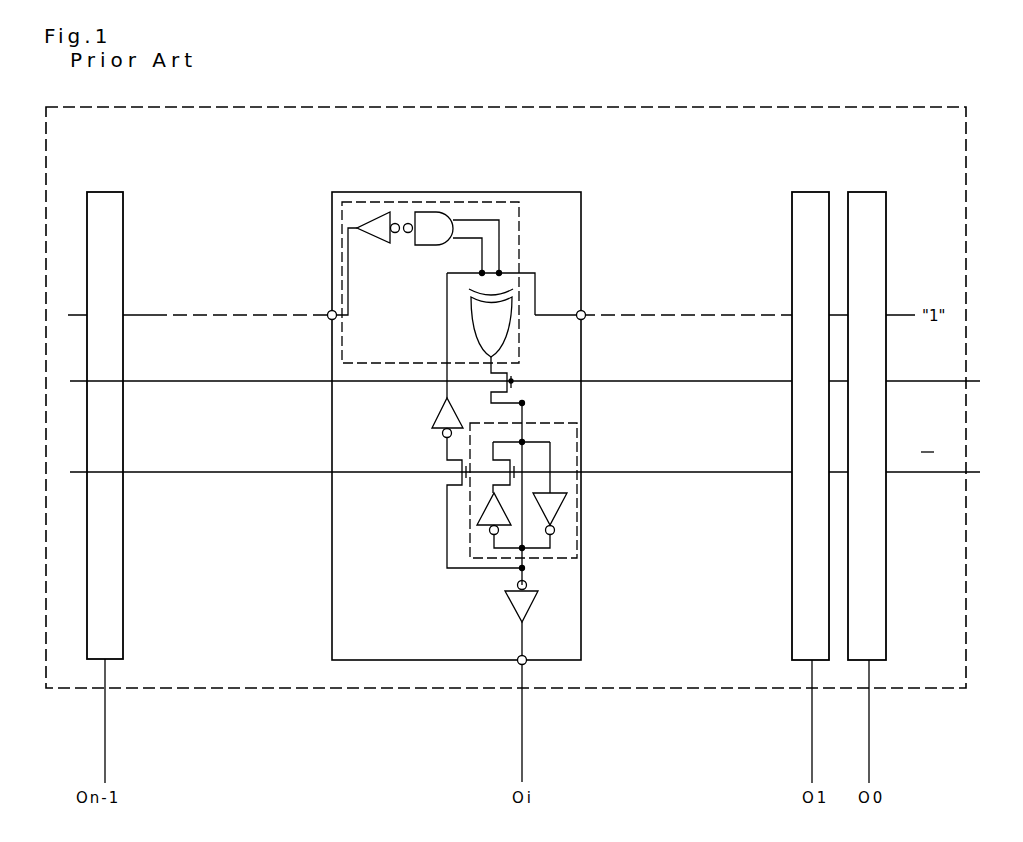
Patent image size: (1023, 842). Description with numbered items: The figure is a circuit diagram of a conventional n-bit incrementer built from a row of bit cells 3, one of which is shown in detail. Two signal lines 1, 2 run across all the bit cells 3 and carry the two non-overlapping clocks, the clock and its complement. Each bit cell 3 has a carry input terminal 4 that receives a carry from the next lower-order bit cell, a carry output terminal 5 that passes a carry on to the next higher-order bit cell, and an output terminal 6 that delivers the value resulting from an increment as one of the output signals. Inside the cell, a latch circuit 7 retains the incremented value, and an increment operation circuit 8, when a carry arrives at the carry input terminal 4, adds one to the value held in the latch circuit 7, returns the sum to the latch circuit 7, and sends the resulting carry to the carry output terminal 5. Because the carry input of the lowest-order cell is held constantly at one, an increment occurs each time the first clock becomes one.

The signal line for clock φ 1 is at (980, 381).
The signal line for clock φ-bar 2 is at (980, 472).
The bit cell 3 is at (103, 192).
The carry input terminal 4 is at (586, 311).
The carry output terminal 5 is at (328, 311).
The output terminal 6 is at (527, 664).
The latch circuit 7 is at (577, 423).
The increment operation circuit 8 is at (520, 245).